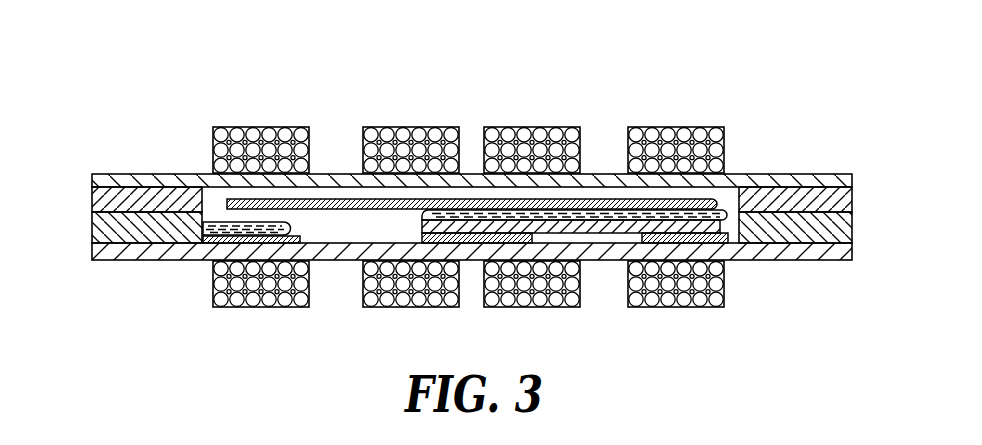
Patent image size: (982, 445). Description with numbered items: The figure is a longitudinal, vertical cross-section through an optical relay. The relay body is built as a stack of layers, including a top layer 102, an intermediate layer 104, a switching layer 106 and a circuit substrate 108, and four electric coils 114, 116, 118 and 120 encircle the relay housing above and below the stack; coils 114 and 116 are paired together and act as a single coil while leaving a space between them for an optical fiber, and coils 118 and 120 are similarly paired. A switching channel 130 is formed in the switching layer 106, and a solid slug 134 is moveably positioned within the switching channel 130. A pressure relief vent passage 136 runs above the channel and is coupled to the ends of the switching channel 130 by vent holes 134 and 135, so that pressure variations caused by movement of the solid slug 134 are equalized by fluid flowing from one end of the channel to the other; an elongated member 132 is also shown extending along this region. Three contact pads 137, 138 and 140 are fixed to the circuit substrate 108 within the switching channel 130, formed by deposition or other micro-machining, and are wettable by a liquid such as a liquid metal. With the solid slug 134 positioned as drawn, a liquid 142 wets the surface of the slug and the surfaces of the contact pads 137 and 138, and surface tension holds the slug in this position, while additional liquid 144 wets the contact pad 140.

The top plate 102 is at (783, 172).
The first layer 104 is at (100, 200).
The switching layer 106 is at (100, 240).
The circuit substrate 108 is at (782, 260).
The electric coil 114 is at (257, 305).
The electric coil 116 is at (378, 124).
The electric coil 118 is at (567, 305).
The electric coil 120 is at (682, 125).
The switching channel 130 is at (344, 229).
The upper conductor strip 132 is at (342, 200).
The solid slug 134 is at (215, 205).
The vent hole 135 is at (732, 197).
The pressure relief vent passage 136 is at (610, 190).
The contact pad 137 is at (724, 243).
The contact pad 138 is at (472, 222).
The contact pad 140 is at (208, 238).
The liquid 142 is at (470, 207).
The additional liquid 144 is at (306, 244).